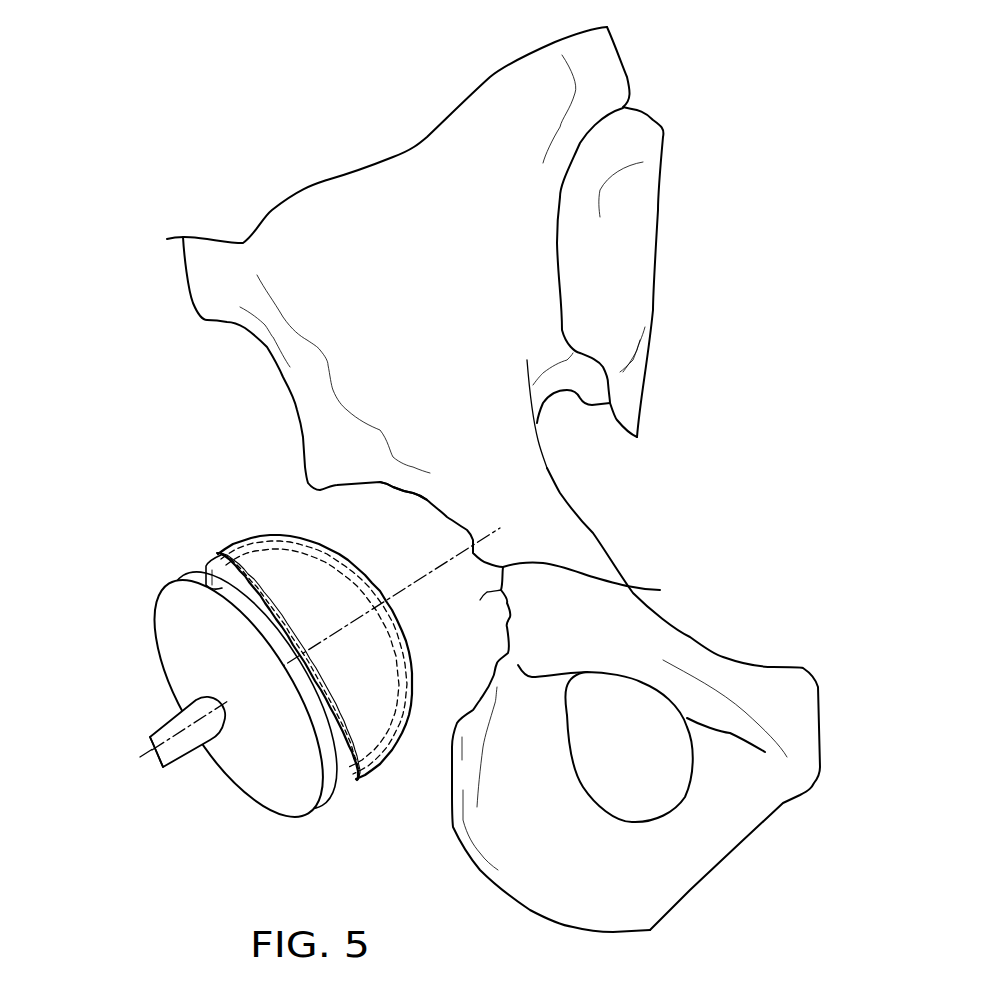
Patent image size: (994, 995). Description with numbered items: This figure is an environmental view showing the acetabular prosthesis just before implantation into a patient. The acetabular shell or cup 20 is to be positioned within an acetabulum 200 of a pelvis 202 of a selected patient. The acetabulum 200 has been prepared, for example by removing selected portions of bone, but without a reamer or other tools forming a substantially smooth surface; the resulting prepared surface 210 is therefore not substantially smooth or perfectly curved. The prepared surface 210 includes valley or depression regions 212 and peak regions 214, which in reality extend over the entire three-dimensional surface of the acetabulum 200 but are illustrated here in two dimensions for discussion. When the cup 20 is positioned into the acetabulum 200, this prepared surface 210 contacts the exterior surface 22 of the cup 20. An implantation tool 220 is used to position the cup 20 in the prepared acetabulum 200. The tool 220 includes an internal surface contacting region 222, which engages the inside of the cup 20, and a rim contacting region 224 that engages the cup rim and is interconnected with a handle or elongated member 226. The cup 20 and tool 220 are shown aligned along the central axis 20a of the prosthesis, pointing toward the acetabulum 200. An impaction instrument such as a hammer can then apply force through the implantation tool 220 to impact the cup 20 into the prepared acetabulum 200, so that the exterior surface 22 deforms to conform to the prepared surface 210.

The acetabulum 200 is at (493, 472).
The pelvis 202 is at (415, 297).
The prepared surface 210 is at (405, 515).
The valley regions 212 is at (645, 590).
The peak regions 214 is at (490, 593).
The implantation tool 220 is at (272, 622).
The internal surface contacting region 222 is at (228, 590).
The rim contacting region 224 is at (184, 578).
The handle 226 is at (161, 744).
The central axis 20a is at (148, 754).
The acetabular shell 20 is at (355, 786).
The exterior surface 22 is at (301, 681).